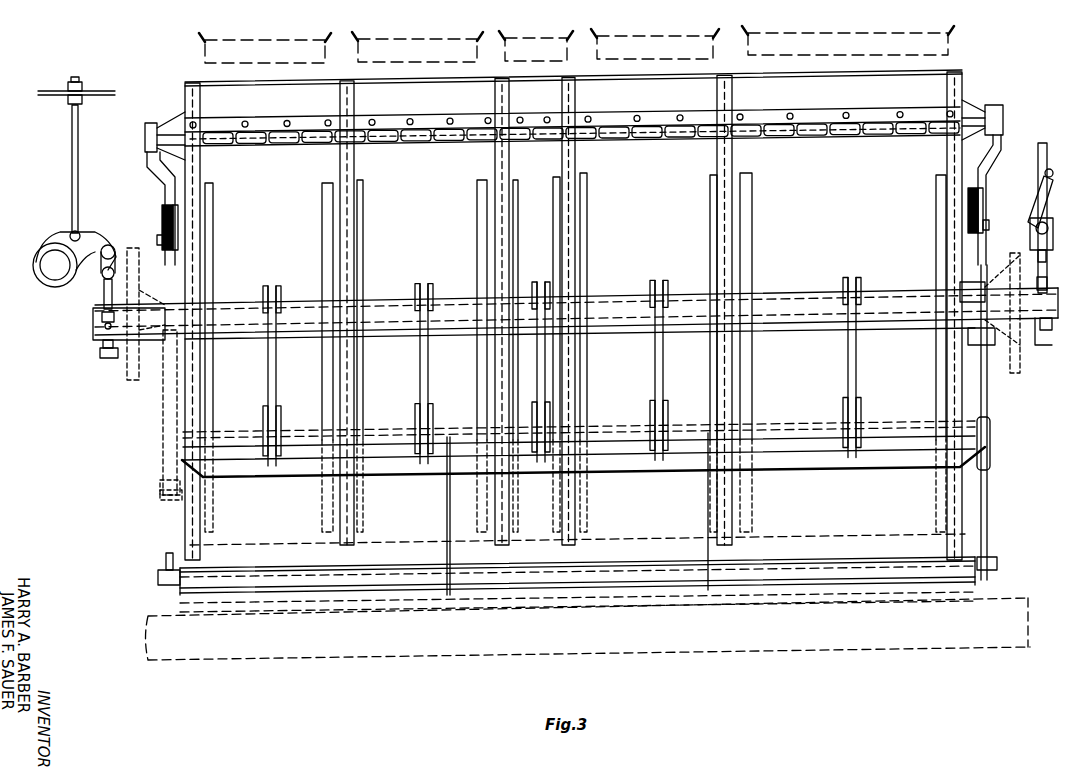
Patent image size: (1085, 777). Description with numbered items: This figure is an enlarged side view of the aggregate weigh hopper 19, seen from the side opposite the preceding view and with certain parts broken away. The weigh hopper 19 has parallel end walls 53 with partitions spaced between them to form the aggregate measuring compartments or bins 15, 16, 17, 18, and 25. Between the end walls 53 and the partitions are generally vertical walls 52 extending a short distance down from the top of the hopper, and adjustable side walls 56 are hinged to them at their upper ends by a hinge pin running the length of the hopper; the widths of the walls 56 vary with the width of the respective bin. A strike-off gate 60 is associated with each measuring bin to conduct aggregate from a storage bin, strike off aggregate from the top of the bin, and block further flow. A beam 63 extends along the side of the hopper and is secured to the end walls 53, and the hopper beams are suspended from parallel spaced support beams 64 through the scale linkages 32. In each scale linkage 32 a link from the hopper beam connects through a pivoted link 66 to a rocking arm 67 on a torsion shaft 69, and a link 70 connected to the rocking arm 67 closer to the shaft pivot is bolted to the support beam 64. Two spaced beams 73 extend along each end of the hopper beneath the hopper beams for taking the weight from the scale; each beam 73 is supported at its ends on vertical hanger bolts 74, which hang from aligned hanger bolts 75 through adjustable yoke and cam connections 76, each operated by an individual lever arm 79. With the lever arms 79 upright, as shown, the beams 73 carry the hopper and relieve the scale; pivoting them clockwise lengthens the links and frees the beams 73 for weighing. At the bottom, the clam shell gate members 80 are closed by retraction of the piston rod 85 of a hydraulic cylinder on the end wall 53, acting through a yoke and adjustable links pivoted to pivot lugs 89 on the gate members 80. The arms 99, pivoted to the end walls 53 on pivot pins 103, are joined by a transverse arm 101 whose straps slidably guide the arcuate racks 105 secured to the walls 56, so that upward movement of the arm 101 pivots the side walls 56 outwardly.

The aggregate measuring compartment 15 is at (843, 351).
The aggregate measuring compartment 16 is at (657, 194).
The aggregate measuring compartment 17 is at (428, 197).
The aggregate measuring compartment 18 is at (272, 201).
The weigh hopper 19 is at (462, 80).
The aggregate measuring compartment 25 is at (543, 202).
The scale linkage 32 is at (96, 225).
The vertical wall 52 is at (257, 92).
The end wall 53 is at (185, 96).
The adjustable side wall 56 is at (290, 158).
The strike-off gate 60 is at (93, 322).
The beam 63 is at (160, 350).
The support beam 64 is at (98, 91).
The pivoted link 66 is at (113, 252).
The rocking arm 67 is at (80, 270).
The torsion shaft 69 is at (45, 285).
The link 70 is at (72, 175).
The beam 73 is at (105, 358).
The hanger bolt 74 is at (1047, 285).
The hanger bolt 75 is at (1044, 143).
The adjustable yoke and cam connection 76 is at (1030, 238).
The lever arm 79 is at (1034, 198).
The gate member 80 is at (195, 592).
The piston rod 85 is at (988, 405).
The pivot lug 89 is at (990, 487).
The arm 99 is at (180, 260).
The transverse arm 101 is at (390, 305).
The pivot pin 103 is at (145, 142).
The arcuate rack 105 is at (268, 372).